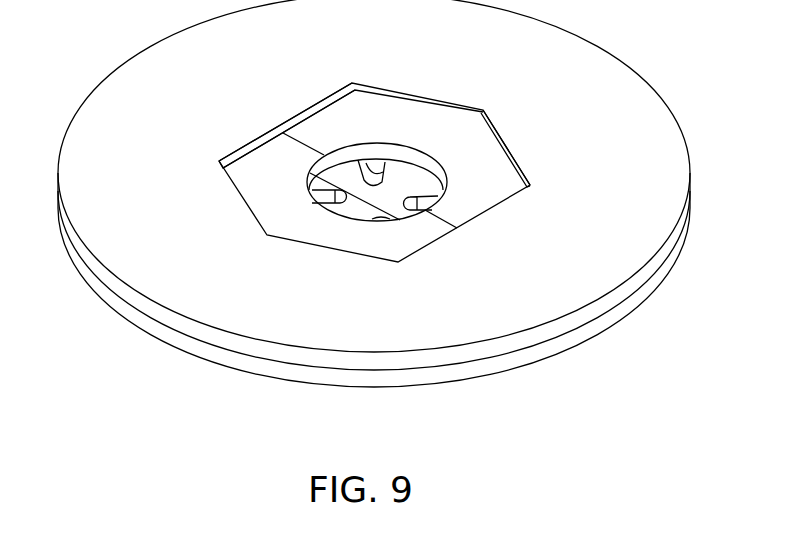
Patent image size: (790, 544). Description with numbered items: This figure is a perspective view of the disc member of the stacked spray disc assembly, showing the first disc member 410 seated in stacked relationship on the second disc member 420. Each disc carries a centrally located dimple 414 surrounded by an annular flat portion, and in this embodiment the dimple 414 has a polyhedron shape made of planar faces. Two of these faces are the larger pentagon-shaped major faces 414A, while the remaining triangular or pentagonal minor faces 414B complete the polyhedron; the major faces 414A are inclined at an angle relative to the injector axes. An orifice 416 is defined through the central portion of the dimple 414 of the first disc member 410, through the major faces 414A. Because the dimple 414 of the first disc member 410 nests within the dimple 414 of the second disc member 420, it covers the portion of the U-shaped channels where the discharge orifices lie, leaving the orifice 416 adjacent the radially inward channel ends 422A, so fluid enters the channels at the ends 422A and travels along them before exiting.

The first disc member 410 is at (354, 362).
The second disc member 420 is at (114, 302).
The dimple 414 is at (537, 127).
The major face 414A is at (352, 107).
The minor face 414B is at (285, 122).
The orifice 416 is at (358, 217).
The channel end 422A is at (388, 176).